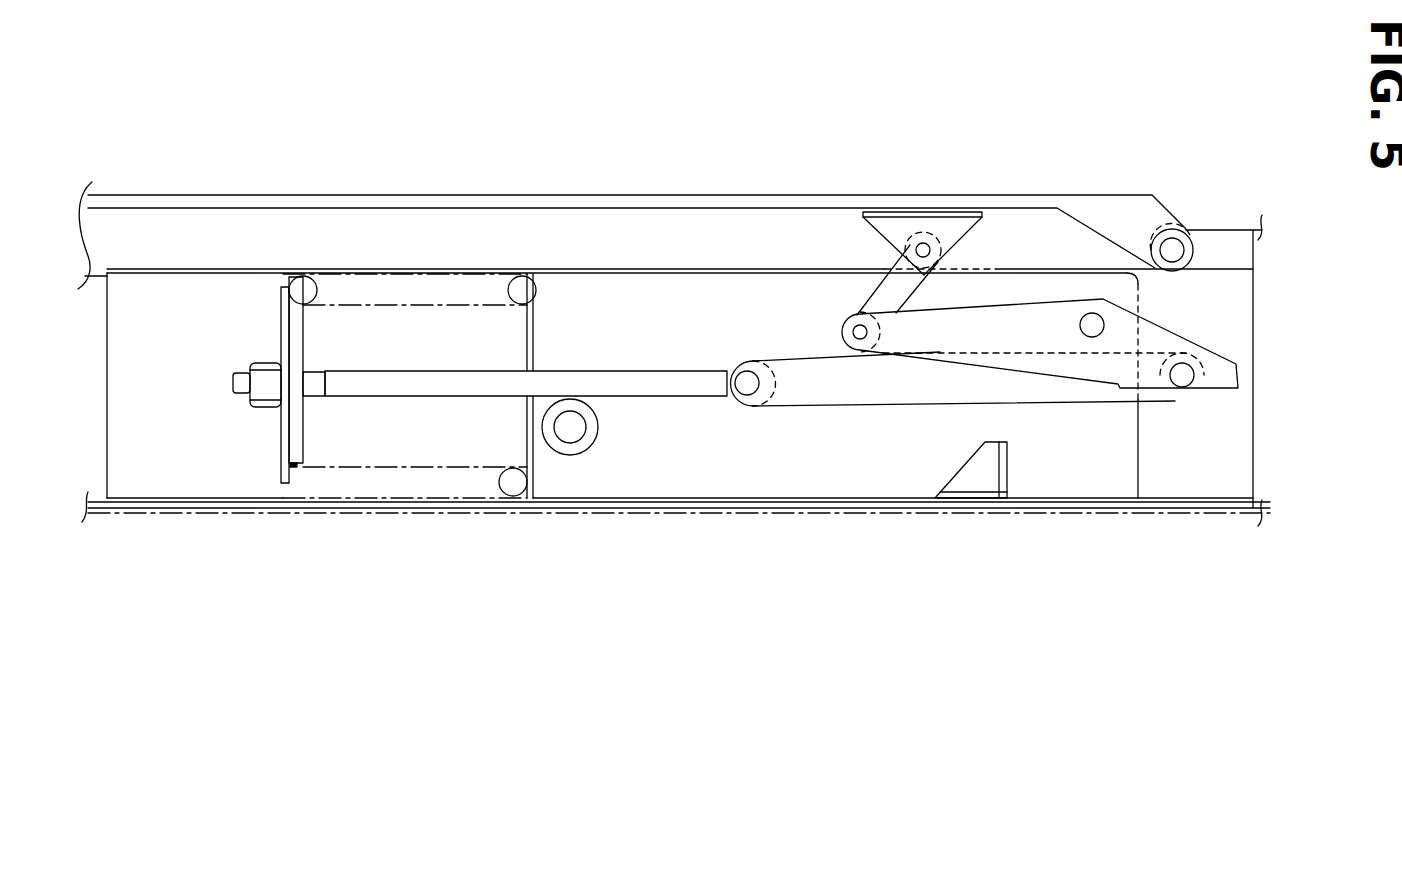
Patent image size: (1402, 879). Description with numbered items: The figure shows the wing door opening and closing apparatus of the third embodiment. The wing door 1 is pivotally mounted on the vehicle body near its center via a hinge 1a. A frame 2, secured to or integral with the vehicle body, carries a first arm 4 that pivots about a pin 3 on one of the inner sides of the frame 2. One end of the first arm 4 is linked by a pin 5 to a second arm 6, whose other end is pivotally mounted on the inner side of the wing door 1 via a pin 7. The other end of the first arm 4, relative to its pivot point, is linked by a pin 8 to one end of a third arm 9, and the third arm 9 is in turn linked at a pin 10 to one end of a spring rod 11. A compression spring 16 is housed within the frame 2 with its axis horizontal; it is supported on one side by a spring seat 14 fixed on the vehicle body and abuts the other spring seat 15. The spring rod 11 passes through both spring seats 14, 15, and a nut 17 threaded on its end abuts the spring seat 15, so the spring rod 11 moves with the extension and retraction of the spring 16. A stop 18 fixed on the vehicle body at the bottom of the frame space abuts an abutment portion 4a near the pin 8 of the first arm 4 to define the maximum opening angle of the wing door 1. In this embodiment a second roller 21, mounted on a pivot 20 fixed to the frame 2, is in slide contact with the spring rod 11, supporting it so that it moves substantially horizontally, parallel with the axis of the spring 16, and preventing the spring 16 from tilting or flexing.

The wing door 1 is at (437, 196).
The hinge 1a is at (1188, 221).
The frame 2 is at (187, 523).
The pin 3 is at (1092, 337).
The first arm 4 is at (1120, 390).
The abutment portion 4a is at (1232, 392).
The pin 5 is at (850, 331).
The second arm 6 is at (866, 270).
The pin 7 is at (932, 262).
The pin 8 is at (1182, 388).
The third arm 9 is at (853, 404).
The pin 10 is at (752, 371).
The spring rod 11 is at (646, 371).
The spring seat 14 is at (535, 460).
The spring seat 15 is at (280, 452).
The spring 16 is at (510, 480).
The nut 17 is at (262, 363).
The stop 18 is at (1010, 467).
The pivot 20 is at (578, 433).
The second roller 21 is at (598, 422).